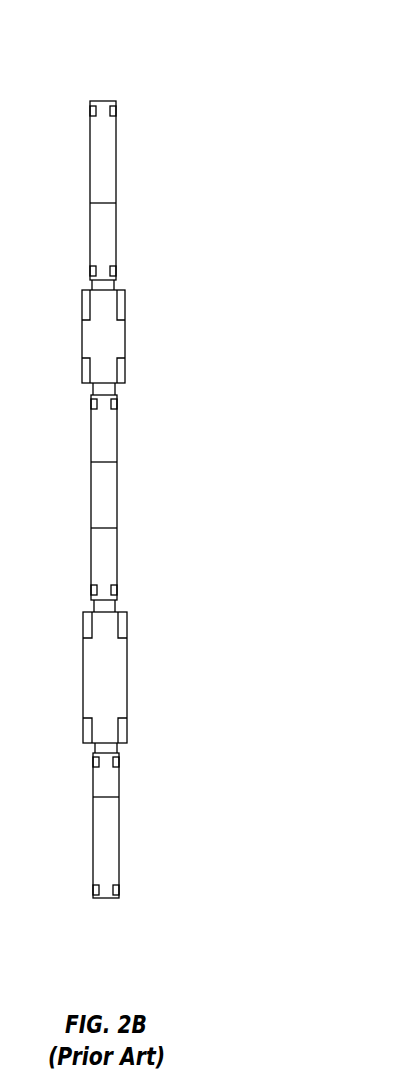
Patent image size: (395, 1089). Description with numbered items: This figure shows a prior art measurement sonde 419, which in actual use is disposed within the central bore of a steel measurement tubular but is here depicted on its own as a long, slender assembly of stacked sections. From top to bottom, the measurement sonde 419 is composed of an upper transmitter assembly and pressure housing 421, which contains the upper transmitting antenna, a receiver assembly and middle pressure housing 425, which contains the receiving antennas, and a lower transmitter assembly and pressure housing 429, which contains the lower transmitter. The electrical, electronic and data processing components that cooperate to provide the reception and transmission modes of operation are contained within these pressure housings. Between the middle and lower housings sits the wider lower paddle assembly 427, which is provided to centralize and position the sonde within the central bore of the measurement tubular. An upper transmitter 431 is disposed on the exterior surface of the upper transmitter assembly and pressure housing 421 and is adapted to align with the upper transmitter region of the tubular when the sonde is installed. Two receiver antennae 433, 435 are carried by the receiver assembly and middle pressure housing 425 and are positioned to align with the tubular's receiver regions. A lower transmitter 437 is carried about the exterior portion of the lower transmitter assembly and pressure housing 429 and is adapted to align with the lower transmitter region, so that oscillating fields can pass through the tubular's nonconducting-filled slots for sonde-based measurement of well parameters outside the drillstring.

The measurement sonde 419 is at (194, 50).
The upper transmitter assembly and pressure housing 421 is at (119, 150).
The receiver assembly and middle pressure housing 425 is at (119, 431).
The lower paddle assembly 427 is at (129, 664).
The lower transmitter assembly and pressure housing 429 is at (121, 859).
The upper transmitter 431 is at (116, 203).
The receiver antenna 433 is at (117, 462).
The receiver antenna 435 is at (117, 528).
The lower transmitter 437 is at (119, 797).